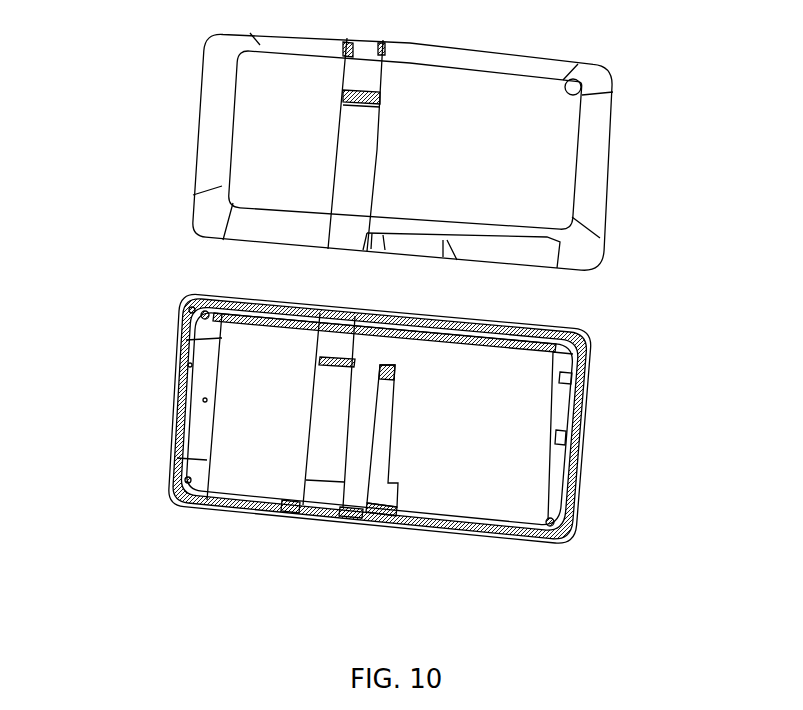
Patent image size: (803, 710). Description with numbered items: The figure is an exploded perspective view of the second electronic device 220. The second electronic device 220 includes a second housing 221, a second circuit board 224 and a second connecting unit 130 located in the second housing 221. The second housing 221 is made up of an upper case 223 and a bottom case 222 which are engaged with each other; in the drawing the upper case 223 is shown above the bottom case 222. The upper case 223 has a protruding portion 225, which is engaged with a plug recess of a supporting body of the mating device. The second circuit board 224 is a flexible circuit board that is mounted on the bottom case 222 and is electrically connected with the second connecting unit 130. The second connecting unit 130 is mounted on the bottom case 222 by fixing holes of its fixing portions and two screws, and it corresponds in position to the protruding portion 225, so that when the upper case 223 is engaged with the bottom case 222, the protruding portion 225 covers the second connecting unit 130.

The second electronic device 220 is at (121, 120).
The second housing 221 is at (688, 172).
The bottom case 222 is at (522, 386).
The upper case 223 is at (515, 218).
The second circuit board 224 is at (378, 435).
The protruding portion 225 is at (418, 247).
The second connecting unit 130 is at (390, 516).